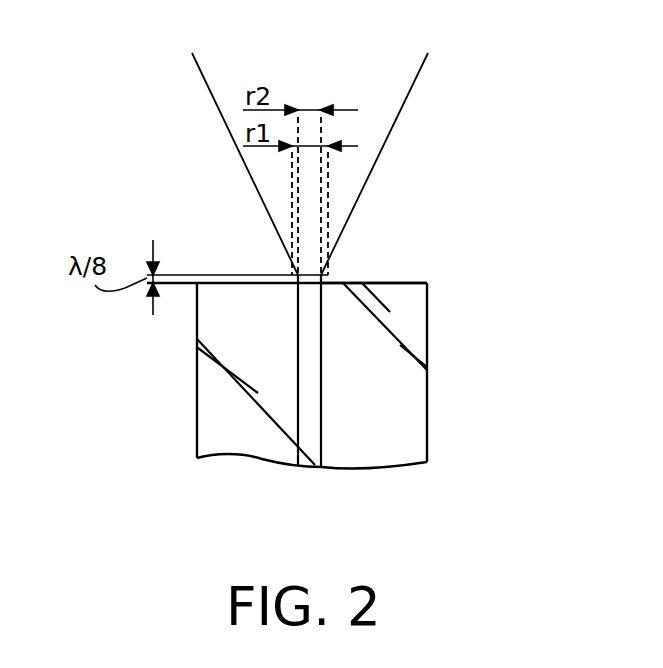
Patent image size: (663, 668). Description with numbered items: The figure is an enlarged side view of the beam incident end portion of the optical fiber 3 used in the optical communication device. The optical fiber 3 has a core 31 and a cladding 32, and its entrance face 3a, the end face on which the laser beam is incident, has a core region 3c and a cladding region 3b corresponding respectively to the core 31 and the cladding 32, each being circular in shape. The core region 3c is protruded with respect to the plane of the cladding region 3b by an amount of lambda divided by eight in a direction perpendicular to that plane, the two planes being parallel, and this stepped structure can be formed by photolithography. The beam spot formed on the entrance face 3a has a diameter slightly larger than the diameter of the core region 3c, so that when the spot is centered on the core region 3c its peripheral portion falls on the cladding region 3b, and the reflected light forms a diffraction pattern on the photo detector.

The optical fiber 3 is at (418, 393).
The entrance face 3a is at (420, 182).
The cladding region 3b is at (374, 283).
The core region 3c is at (311, 273).
The core 31 is at (312, 420).
The cladding 32 is at (377, 442).